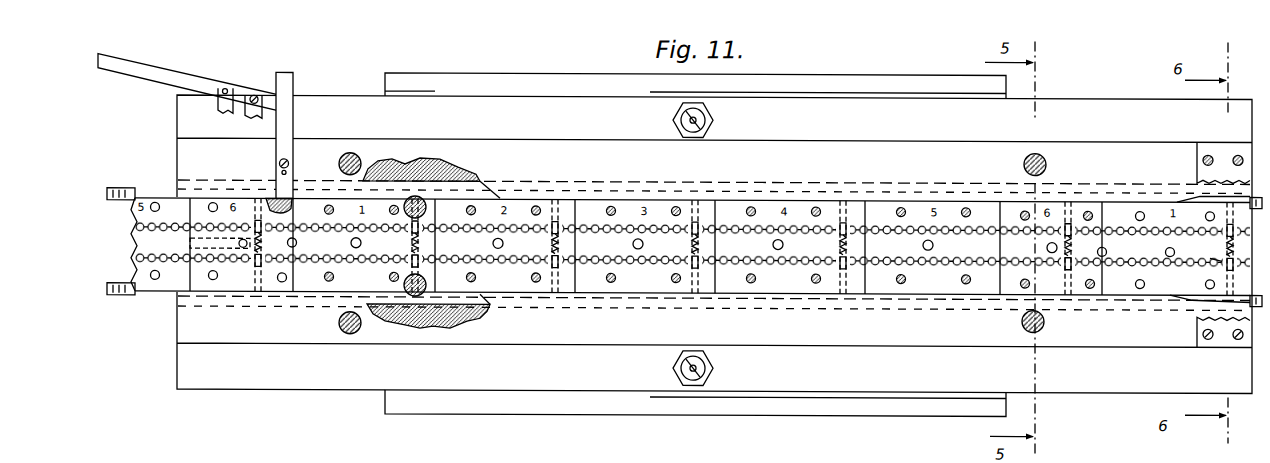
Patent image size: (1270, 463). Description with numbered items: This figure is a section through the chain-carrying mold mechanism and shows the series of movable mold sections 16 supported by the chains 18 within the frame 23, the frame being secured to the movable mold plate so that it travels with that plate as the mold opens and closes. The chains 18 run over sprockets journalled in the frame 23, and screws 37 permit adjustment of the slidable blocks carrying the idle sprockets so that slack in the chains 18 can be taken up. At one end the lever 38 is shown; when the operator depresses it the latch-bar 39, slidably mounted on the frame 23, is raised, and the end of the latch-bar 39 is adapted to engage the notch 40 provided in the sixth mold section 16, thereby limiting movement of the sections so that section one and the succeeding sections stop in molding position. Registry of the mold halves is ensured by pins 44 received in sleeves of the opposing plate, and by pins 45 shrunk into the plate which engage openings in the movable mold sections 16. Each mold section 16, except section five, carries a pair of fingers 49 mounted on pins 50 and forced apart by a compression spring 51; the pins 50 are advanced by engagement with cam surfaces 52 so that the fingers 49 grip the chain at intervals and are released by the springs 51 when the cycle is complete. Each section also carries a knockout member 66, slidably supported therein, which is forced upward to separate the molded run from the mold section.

The movable mold section 16 is at (380, 197).
The chain 18 is at (118, 203).
The frame 23 is at (862, 102).
The screw 37 is at (707, 118).
The lever 38 is at (133, 73).
The latch-bar 39 is at (290, 125).
The notch 40 is at (268, 196).
The pin 44 is at (340, 162).
The pin 45 is at (388, 276).
The finger 49 is at (412, 231).
The pin 50 is at (1197, 213).
The compression spring 51 is at (1205, 256).
The cam surface 52 is at (1200, 189).
The knockout member 66 is at (351, 242).